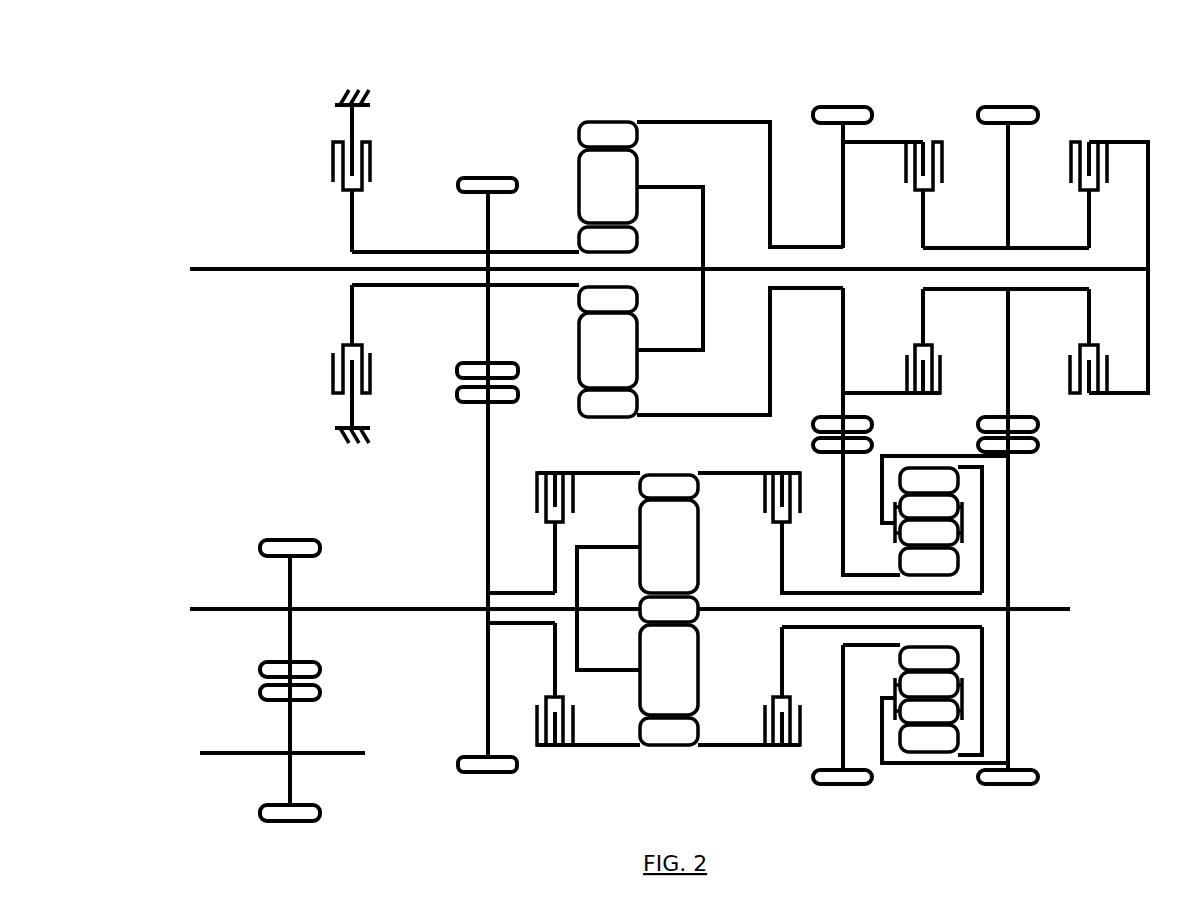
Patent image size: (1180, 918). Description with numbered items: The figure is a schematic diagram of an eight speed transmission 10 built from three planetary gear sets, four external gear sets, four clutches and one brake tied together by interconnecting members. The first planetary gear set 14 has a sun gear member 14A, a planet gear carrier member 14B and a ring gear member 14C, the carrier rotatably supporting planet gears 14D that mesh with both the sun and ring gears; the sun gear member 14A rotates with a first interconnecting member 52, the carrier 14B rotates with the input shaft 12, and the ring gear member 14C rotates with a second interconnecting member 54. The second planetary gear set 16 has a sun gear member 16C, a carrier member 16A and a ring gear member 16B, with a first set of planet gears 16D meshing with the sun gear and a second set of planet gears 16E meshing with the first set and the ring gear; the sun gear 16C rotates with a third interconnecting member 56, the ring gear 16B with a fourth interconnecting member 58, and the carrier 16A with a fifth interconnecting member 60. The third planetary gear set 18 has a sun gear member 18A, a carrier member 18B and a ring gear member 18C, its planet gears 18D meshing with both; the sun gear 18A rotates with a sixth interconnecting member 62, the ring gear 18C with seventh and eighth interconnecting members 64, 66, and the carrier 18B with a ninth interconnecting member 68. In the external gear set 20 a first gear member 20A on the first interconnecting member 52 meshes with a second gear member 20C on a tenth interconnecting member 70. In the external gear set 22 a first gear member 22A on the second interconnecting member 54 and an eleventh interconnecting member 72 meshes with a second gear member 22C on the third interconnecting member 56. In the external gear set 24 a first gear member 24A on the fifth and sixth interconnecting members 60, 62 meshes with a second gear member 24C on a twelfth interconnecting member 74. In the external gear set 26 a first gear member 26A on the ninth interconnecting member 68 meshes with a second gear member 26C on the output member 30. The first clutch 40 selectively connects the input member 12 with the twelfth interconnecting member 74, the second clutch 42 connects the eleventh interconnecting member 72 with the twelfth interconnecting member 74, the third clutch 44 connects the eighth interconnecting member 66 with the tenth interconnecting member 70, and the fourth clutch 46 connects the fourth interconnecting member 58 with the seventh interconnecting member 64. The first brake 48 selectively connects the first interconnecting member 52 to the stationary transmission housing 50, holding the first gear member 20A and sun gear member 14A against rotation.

The eight speed transmission 10 is at (1089, 85).
The input shaft 12 is at (214, 272).
The planetary gear set 14 is at (632, 265).
The sun gear member 14A is at (608, 269).
The planet gear carrier member 14B is at (703, 229).
The ring gear member 14C is at (608, 269).
The planet gears 14D is at (608, 269).
The planetary gear set 16 is at (943, 619).
The planet gear carrier member 16A is at (882, 521).
The ring gear member 16B is at (929, 610).
The sun gear member 16C is at (929, 609).
The first set of planet gears 16D is at (929, 608).
The second set of planet gears 16E is at (929, 609).
The planetary gear set 18 is at (668, 627).
The sun gear member 18A is at (669, 609).
The planet gear carrier member 18B is at (608, 608).
The ring gear member 18C is at (669, 610).
The planet gears 18D is at (669, 607).
The external gear set 20 is at (465, 504).
The first gear member 20A is at (488, 222).
The second gear member 20C is at (488, 672).
The external gear set 22 is at (867, 470).
The first gear member 22A is at (845, 192).
The second gear member 22C is at (843, 718).
The external gear set 24 is at (1014, 469).
The first gear member 24A is at (1010, 521).
The second gear member 24C is at (1008, 352).
The external gear set 26 is at (263, 657).
The first gear member 26A is at (290, 576).
The second gear member 26C is at (290, 718).
The output member 30 is at (350, 754).
The first clutch 40 is at (1108, 162).
The second clutch 42 is at (942, 160).
The third clutch 44 is at (573, 490).
The fourth clutch 46 is at (765, 493).
The first brake 48 is at (333, 162).
The transmission housing 50 is at (342, 106).
The first interconnecting member 52 is at (410, 288).
The second interconnecting member 54 is at (803, 247).
The third interconnecting member 56 is at (848, 580).
The fourth interconnecting member 58 is at (960, 456).
The fifth interconnecting member 60 is at (905, 456).
The sixth interconnecting member 62 is at (1012, 612).
The seventh interconnecting member 64 is at (745, 472).
The eighth interconnecting member 66 is at (612, 472).
The ninth interconnecting member 68 is at (438, 612).
The tenth interconnecting member 70 is at (515, 592).
The eleventh interconnecting member 72 is at (870, 143).
The twelfth interconnecting member 74 is at (982, 248).